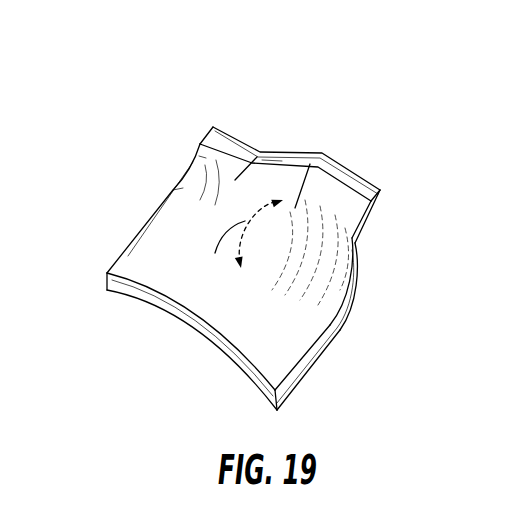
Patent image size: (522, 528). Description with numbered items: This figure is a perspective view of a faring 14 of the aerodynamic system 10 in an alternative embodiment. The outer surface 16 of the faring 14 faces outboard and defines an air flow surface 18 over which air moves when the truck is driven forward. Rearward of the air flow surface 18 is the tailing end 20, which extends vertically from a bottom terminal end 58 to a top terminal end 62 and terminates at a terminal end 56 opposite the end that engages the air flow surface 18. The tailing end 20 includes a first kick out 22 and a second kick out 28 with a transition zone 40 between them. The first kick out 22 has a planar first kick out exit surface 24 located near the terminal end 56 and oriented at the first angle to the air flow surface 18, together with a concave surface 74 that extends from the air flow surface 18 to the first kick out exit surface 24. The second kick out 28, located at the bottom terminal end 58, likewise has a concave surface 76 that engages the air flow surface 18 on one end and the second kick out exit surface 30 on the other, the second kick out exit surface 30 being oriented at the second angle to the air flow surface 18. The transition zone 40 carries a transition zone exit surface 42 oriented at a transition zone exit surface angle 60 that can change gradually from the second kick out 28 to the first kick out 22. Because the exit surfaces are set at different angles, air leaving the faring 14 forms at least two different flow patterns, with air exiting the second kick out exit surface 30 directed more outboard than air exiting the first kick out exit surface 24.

The aerodynamic system 10 is at (392, 99).
The faring 14 is at (189, 63).
The outer surface 16 is at (152, 272).
The air flow surface 18 is at (280, 342).
The tailing end 20 is at (374, 198).
The first kick out 22 is at (200, 155).
The first kick out exit surface 24 is at (218, 165).
The second kick out 28 is at (328, 217).
The second kick out exit surface 30 is at (343, 208).
The transition zone 40 is at (270, 156).
The transition zone exit surface 42 is at (297, 187).
The terminal end 56 is at (213, 128).
The bottom terminal end 58 is at (371, 201).
The transition zone exit surface angle 60 is at (241, 245).
The top terminal end 62 is at (185, 183).
The concave surface 74 is at (213, 193).
The concave surface 76 is at (356, 288).